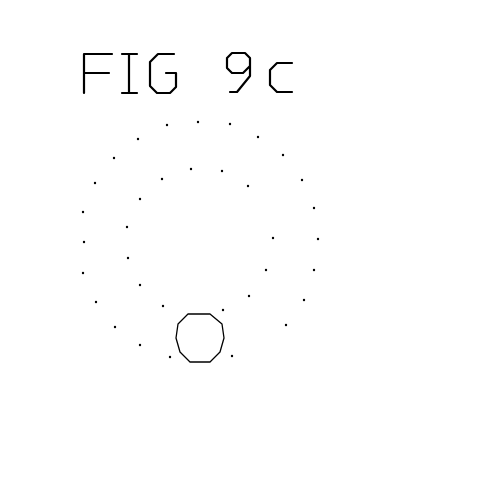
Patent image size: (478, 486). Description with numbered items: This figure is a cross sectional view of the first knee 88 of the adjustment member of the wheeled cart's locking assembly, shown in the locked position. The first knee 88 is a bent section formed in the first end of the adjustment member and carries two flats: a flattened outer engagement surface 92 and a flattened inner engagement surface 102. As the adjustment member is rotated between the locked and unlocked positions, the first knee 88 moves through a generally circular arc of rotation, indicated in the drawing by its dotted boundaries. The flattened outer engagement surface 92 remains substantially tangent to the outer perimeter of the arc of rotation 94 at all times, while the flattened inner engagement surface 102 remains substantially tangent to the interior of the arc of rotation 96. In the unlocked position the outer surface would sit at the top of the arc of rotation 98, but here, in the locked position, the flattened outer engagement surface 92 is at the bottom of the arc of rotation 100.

The first knee 88 is at (225, 336).
The flattened outer engagement surface 92 is at (202, 364).
The outer perimeter of the arc of rotation 94 is at (320, 261).
The interior of the arc of rotation 96 is at (252, 180).
The top of the arc of rotation 98 is at (268, 130).
The bottom of the arc of rotation 100 is at (141, 360).
The flattened inner engagement surface 102 is at (197, 316).